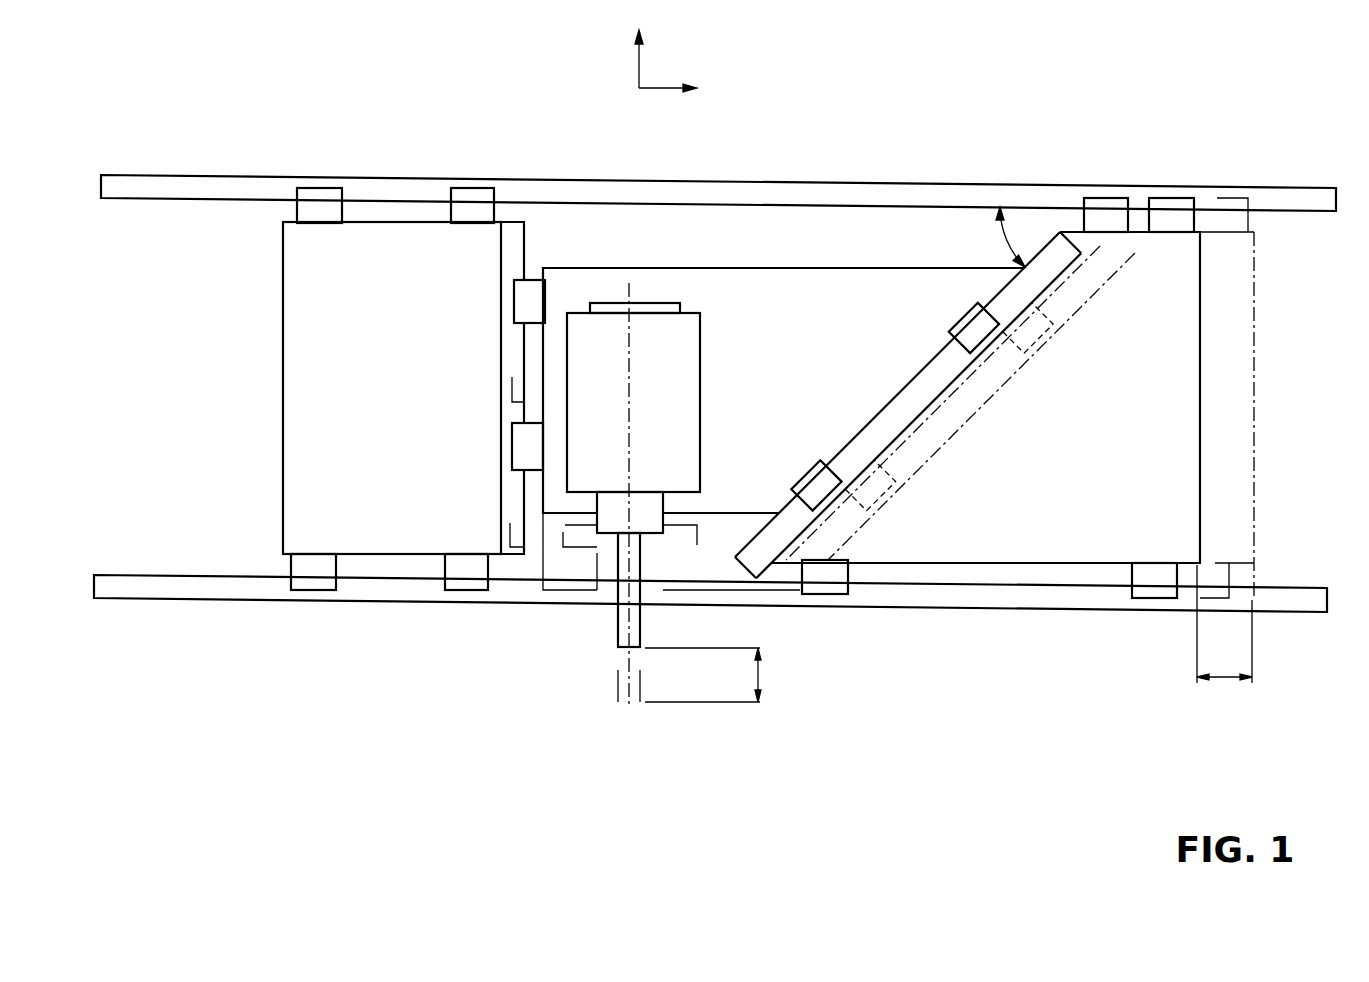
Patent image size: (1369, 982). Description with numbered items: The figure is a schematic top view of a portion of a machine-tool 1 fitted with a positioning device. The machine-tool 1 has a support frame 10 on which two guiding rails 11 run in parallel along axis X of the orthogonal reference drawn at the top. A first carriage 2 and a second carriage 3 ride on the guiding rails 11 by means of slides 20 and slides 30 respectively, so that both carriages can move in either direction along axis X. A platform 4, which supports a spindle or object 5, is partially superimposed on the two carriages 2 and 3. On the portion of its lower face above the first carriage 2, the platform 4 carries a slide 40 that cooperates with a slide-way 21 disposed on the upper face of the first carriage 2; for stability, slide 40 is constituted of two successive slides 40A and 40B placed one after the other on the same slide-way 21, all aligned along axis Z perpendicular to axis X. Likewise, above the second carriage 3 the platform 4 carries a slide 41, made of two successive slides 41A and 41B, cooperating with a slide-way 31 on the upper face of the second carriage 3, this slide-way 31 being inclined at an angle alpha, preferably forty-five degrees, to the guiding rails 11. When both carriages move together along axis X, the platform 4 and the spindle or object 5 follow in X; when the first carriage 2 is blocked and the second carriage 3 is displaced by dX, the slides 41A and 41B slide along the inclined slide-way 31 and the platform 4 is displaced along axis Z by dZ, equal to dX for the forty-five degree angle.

The machine-tool 1 is at (847, 148).
The first carriage 2 is at (336, 481).
The second carriage 3 is at (1026, 484).
The platform 4 is at (763, 338).
The spindle or object 5 is at (581, 458).
The support frame 10 is at (717, 393).
The guiding rails 11 is at (1298, 207).
The slides 20 is at (475, 207).
The slide-way 21 is at (526, 245).
The slides 30 is at (1175, 210).
The slide-way 31 is at (755, 555).
The slide 40 is at (469, 366).
The slide 40A is at (522, 448).
The slide 40B is at (525, 297).
The slide 41 is at (881, 405).
The slide 41A is at (808, 478).
The slide 41B is at (968, 322).